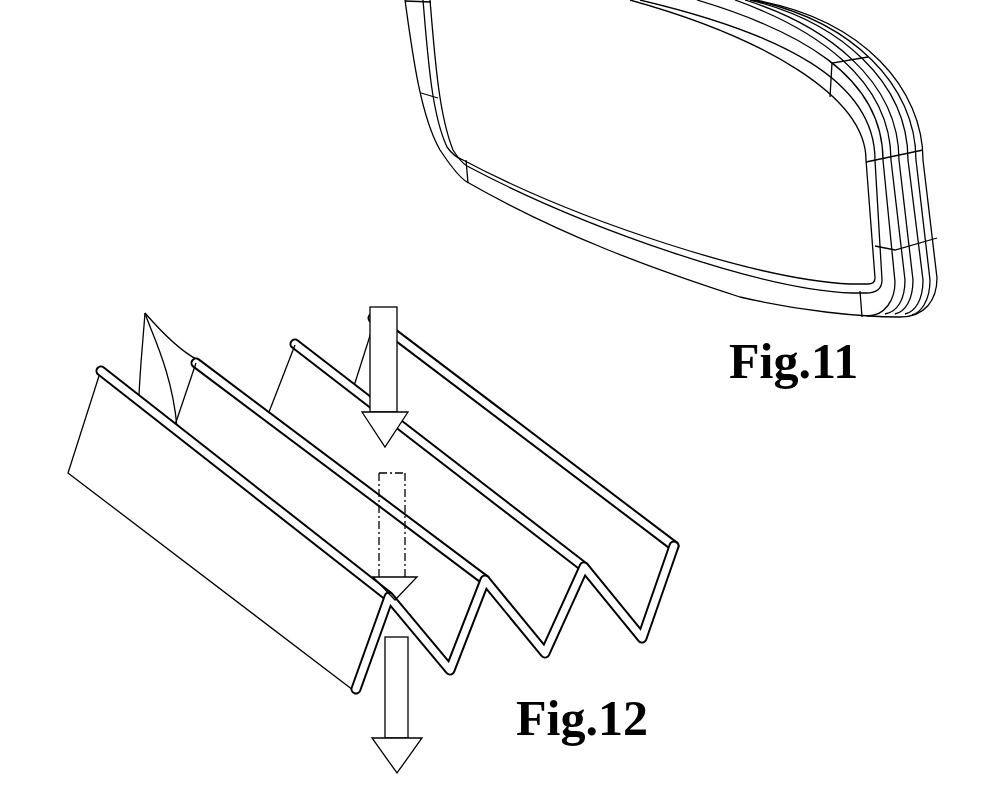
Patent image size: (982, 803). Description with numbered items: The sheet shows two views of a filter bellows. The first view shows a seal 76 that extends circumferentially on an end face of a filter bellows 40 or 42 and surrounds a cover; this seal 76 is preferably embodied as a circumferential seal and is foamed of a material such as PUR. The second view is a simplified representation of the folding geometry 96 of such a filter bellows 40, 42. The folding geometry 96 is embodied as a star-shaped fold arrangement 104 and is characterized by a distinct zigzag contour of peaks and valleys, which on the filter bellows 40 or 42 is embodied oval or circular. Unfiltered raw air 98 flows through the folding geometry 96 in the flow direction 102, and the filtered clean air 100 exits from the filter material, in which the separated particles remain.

In FIG. 11, the filter bellows 40 is at (665, 222).
In FIG. 11, the filter bellows 42 is at (663, 300).
In FIG. 11, the seal 76 is at (582, 230).
In FIG. 12, the folding geometry 96 is at (562, 432).
In FIG. 12, the raw air 98 is at (382, 320).
In FIG. 12, the clean air 100 is at (398, 707).
In FIG. 12, the flow direction 102 is at (383, 548).
In FIG. 12, the star-shaped fold arrangement 104 is at (146, 309).